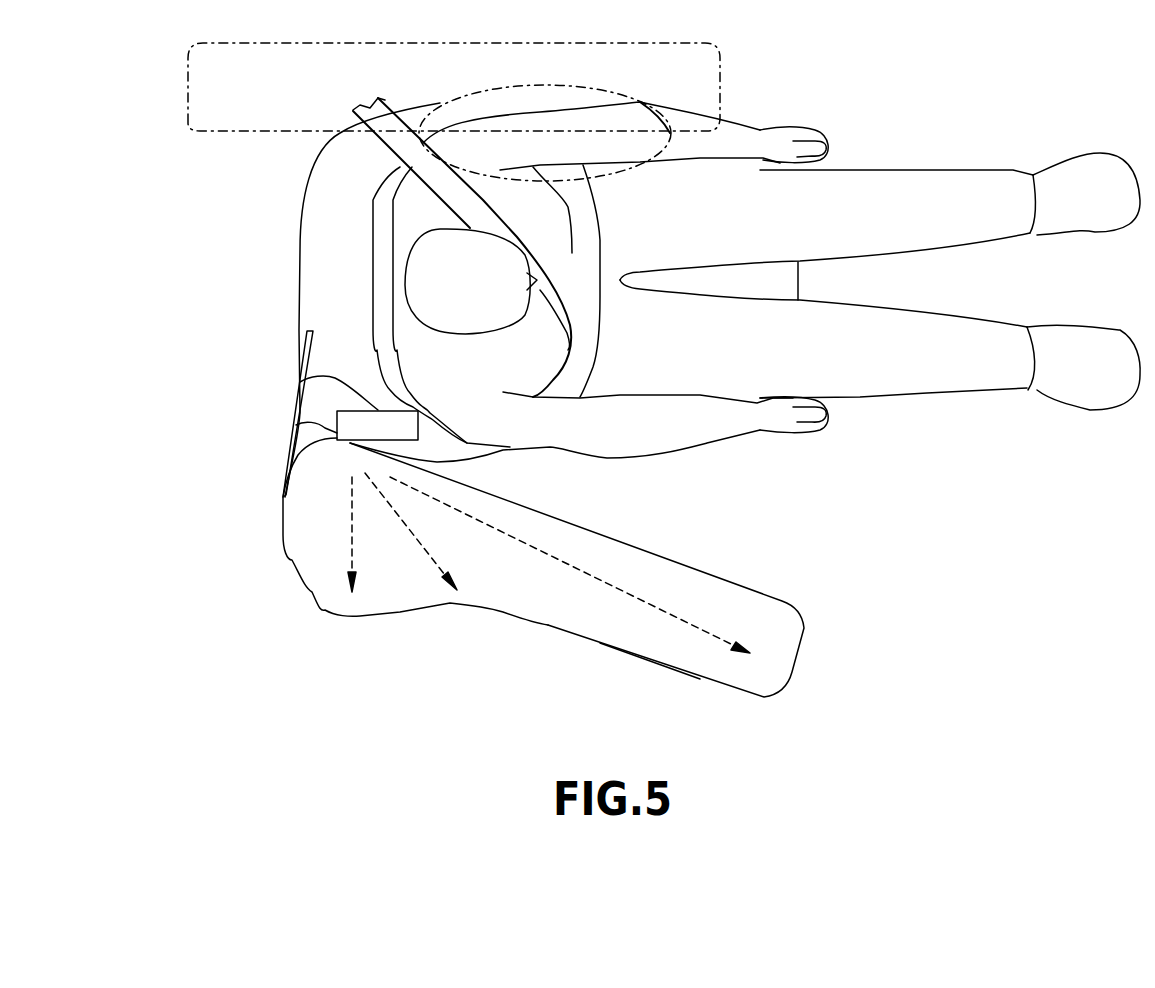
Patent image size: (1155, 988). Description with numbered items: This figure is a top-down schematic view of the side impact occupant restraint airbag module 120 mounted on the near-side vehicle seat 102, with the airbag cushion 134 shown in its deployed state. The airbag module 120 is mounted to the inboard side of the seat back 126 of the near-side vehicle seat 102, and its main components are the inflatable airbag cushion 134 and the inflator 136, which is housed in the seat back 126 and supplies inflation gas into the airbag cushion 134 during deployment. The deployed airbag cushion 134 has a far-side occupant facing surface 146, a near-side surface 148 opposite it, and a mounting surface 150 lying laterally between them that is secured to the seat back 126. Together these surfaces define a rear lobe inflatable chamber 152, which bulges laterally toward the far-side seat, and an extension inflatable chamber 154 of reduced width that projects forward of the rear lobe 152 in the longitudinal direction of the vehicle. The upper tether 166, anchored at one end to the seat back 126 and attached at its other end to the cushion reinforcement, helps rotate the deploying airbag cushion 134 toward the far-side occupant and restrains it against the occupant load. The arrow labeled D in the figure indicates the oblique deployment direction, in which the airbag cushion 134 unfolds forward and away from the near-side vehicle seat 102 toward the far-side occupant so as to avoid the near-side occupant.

The near-side vehicle seat 102 is at (213, 253).
The airbag module 120 is at (265, 613).
The seat back 126 is at (300, 235).
The airbag cushion 134 is at (395, 580).
The inflator 136 is at (300, 387).
The far-side occupant facing surface 146 is at (547, 630).
The near-side surface 148 is at (587, 530).
The mounting surface 150 is at (287, 548).
The rear lobe inflatable chamber 152 is at (322, 557).
The extension inflatable chamber 154 is at (680, 647).
The upper tether 166 is at (290, 427).
The deployment direction D is at (873, 468).